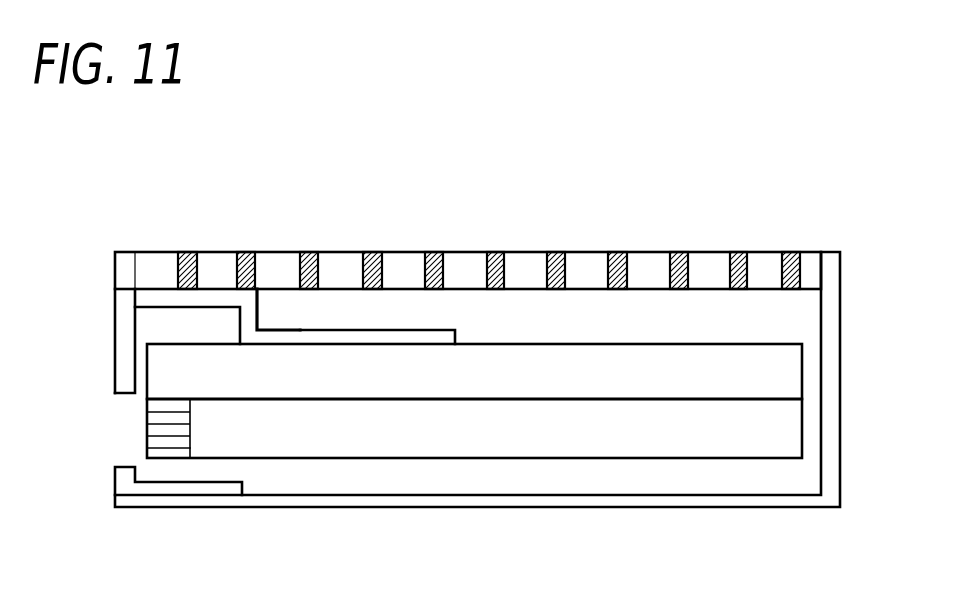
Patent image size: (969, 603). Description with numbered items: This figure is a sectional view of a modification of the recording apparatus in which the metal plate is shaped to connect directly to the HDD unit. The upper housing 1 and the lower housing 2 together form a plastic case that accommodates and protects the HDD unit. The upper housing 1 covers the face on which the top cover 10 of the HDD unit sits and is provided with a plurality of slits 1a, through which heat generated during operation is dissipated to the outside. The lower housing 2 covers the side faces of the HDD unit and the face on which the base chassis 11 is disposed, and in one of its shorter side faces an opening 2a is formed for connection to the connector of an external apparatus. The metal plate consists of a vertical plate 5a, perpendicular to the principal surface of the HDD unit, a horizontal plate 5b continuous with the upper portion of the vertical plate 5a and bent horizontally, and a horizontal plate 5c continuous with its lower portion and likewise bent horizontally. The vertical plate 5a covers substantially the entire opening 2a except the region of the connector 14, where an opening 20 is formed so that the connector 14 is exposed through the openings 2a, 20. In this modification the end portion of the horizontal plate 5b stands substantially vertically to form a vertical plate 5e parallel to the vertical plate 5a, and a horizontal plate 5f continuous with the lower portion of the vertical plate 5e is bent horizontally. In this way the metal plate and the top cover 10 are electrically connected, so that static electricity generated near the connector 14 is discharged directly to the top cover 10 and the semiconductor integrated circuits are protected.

The upper housing 1 is at (530, 265).
The slits 1a is at (787, 268).
The lower housing 2 is at (530, 507).
The opening 2a is at (104, 337).
The vertical plate 5a is at (122, 328).
The horizontal plate 5b is at (166, 300).
The horizontal plate 5c is at (222, 495).
The vertical plate 5e is at (252, 325).
The horizontal plate 5f is at (346, 338).
The top cover 10 is at (795, 377).
The base chassis 11 is at (795, 438).
The connector 14 is at (165, 442).
The opening 20 is at (132, 428).